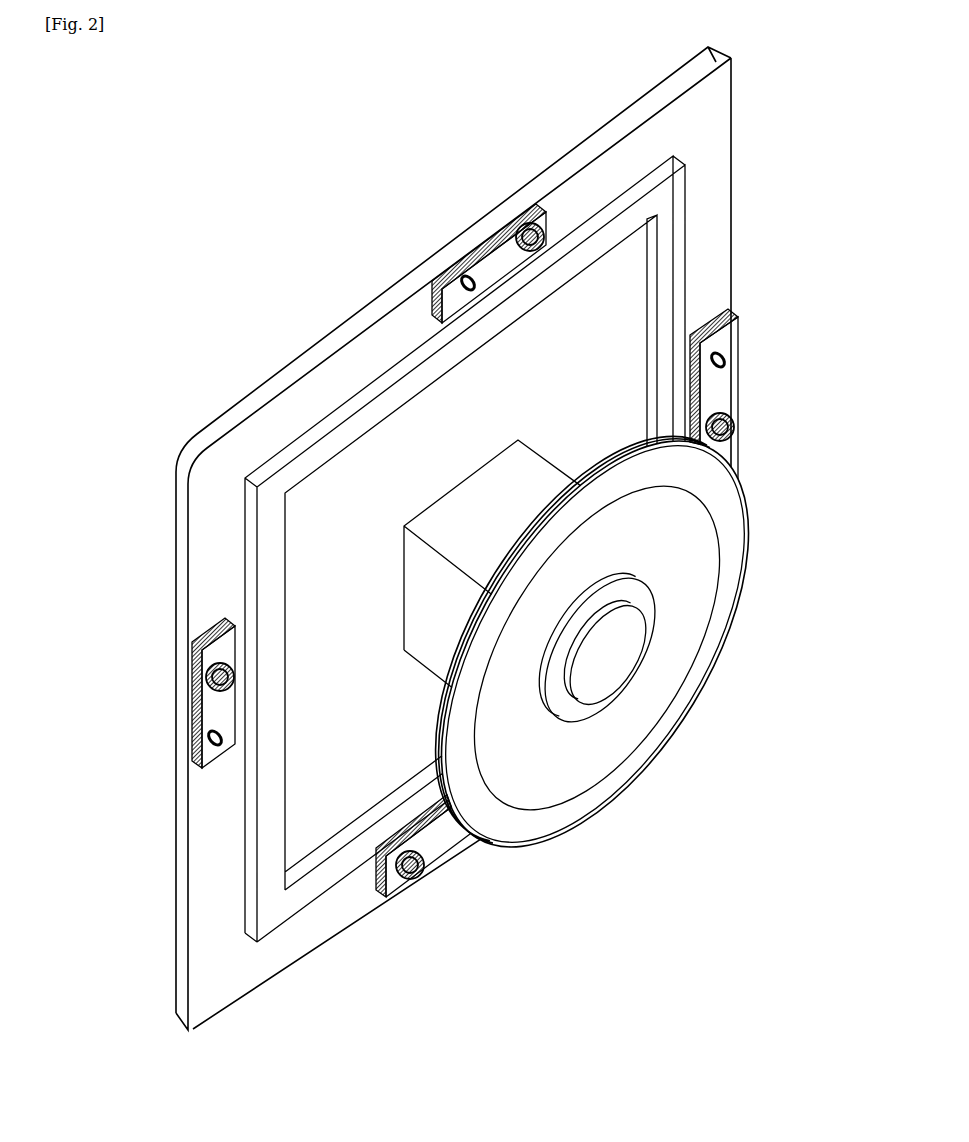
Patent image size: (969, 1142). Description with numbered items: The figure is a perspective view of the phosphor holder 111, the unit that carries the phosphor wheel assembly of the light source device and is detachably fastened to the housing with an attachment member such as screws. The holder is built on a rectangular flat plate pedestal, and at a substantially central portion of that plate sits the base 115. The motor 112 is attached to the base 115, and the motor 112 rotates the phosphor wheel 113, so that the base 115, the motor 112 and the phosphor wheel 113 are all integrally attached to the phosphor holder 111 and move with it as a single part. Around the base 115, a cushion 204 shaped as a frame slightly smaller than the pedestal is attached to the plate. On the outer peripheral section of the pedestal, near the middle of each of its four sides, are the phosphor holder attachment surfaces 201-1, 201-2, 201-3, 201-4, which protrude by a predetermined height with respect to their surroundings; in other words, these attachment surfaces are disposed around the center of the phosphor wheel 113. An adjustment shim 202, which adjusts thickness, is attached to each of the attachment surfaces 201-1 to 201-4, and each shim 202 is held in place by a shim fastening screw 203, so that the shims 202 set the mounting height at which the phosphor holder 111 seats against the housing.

The phosphor holder 111 is at (283, 387).
The motor 112 is at (625, 652).
The phosphor wheel 113 is at (749, 588).
The base 115 is at (525, 452).
The phosphor holder attachment surface 201-1 is at (437, 300).
The phosphor holder attachment surface 201-2 is at (733, 312).
The phosphor holder attachment surface 201-3 is at (373, 897).
The phosphor holder attachment surface 201-4 is at (205, 643).
The adjustment shim 202 is at (497, 253).
The shim fastening screw 203 is at (527, 224).
The cushion 204 is at (415, 370).